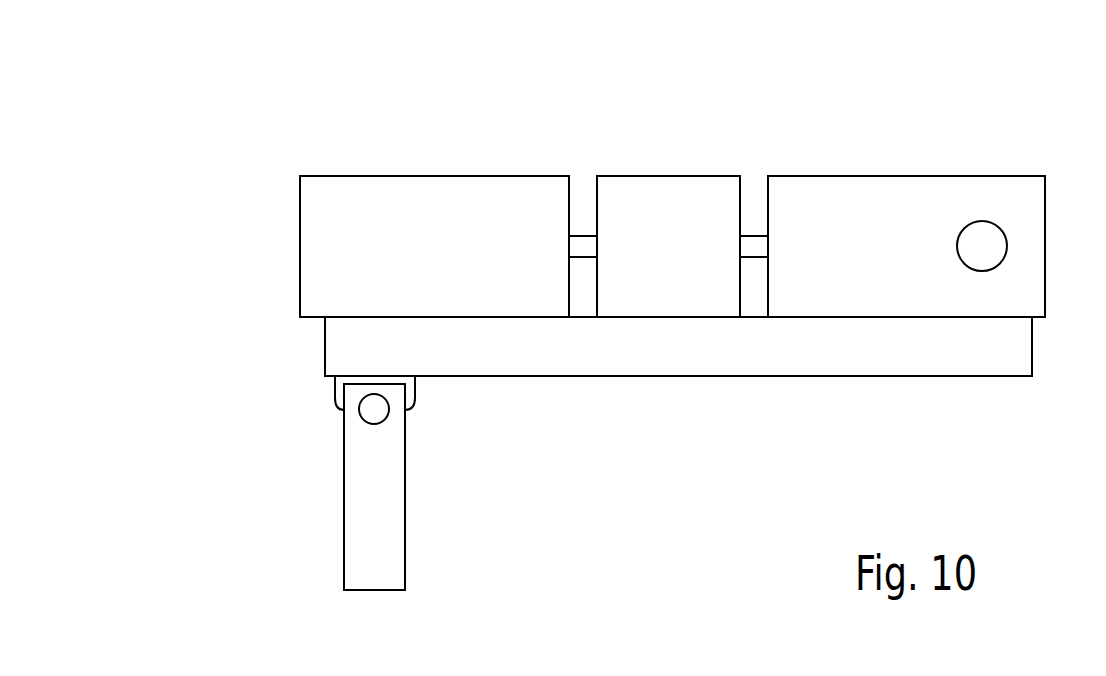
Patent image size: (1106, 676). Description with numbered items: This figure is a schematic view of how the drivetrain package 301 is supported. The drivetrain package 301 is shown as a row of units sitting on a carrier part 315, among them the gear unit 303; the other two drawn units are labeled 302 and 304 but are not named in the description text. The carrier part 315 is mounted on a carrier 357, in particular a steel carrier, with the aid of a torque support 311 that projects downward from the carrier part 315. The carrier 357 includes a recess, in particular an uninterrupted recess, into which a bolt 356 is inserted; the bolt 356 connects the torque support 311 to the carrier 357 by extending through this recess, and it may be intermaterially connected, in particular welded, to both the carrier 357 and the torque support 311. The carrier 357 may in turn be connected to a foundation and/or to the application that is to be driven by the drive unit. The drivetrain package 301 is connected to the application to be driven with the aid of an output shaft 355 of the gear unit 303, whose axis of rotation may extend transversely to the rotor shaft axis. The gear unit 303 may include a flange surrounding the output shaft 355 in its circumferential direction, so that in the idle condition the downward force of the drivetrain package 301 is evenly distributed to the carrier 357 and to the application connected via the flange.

The drivetrain package 301 is at (330, 118).
The first module housing 302 is at (335, 253).
The gear unit 303 is at (845, 207).
The intermediate module 304 is at (654, 202).
The torque support 311 is at (338, 381).
The carrier part 315 is at (360, 346).
The output shaft 355 is at (982, 246).
The bolt 356 is at (374, 409).
The carrier 357 is at (363, 525).